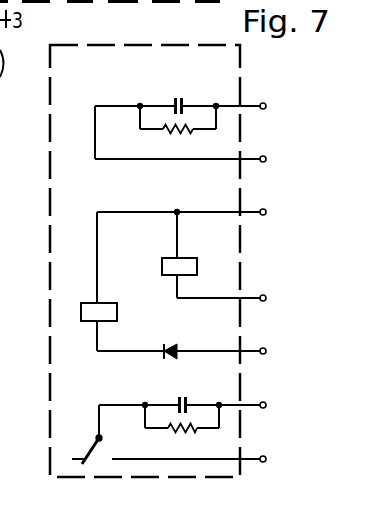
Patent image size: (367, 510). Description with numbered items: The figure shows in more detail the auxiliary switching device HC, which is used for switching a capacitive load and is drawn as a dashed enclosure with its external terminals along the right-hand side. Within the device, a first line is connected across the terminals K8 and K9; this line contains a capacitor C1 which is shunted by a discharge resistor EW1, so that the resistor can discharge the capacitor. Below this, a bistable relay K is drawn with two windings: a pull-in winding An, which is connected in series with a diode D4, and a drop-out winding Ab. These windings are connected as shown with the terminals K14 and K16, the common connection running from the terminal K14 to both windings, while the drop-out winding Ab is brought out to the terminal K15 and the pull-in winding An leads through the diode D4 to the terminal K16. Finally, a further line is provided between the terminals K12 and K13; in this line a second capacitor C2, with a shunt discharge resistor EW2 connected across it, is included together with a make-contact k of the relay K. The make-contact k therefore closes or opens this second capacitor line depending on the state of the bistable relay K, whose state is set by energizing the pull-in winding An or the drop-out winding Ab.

The auxiliary switching device HC is at (50, 262).
The capacitor C1 is at (176, 92).
The discharge resistor EW1 is at (180, 143).
The terminal K8 is at (276, 106).
The terminal K9 is at (276, 159).
The terminal K14 is at (280, 212).
The bistable relay K is at (132, 291).
The drop-out winding Ab is at (174, 281).
The terminal K15 is at (280, 298).
The pull-in winding An is at (92, 328).
The diode D4 is at (169, 338).
The terminal K16 is at (280, 351).
The second capacitor C2 is at (182, 392).
The shunt discharge resistor EW2 is at (204, 441).
The terminal K12 is at (280, 406).
The terminal K13 is at (280, 459).
The make-contact k is at (90, 455).